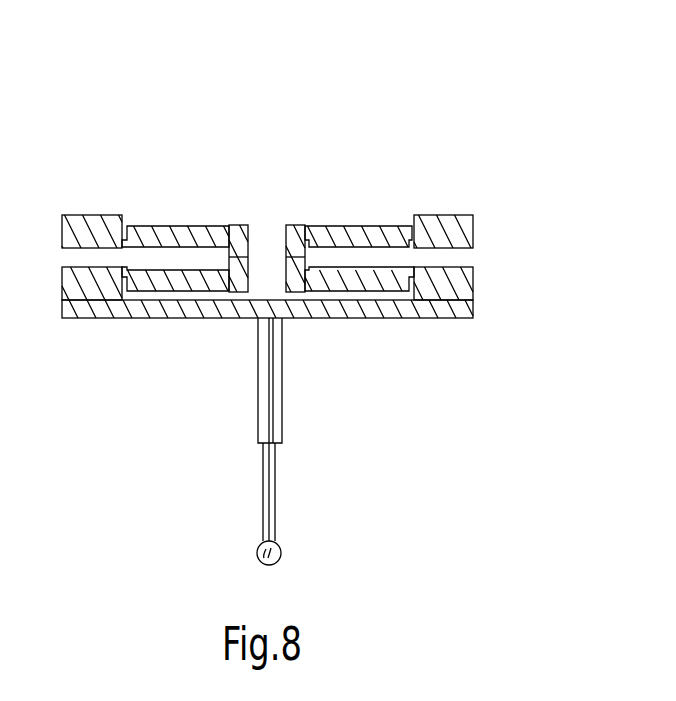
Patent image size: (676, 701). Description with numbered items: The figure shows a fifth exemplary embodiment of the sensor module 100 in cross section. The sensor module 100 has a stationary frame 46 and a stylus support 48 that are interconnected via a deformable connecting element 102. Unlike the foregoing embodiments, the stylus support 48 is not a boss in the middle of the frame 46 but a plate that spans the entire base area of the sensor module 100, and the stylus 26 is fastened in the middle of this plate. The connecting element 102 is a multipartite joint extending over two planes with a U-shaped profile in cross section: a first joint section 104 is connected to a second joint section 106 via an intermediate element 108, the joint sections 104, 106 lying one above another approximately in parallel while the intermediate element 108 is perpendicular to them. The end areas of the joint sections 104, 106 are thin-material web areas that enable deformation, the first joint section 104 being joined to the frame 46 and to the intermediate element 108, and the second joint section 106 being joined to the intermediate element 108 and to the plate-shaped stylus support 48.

The sensor module 100 is at (487, 510).
The connecting element 102 is at (357, 213).
The first joint section 104 is at (169, 226).
The second joint section 106 is at (170, 280).
The intermediate element 108 is at (238, 225).
The stationary frame 46 is at (457, 215).
The stylus support 48 is at (444, 313).
The stylus 26 is at (265, 502).